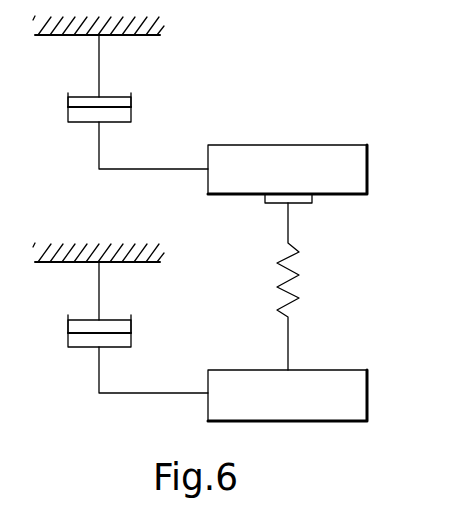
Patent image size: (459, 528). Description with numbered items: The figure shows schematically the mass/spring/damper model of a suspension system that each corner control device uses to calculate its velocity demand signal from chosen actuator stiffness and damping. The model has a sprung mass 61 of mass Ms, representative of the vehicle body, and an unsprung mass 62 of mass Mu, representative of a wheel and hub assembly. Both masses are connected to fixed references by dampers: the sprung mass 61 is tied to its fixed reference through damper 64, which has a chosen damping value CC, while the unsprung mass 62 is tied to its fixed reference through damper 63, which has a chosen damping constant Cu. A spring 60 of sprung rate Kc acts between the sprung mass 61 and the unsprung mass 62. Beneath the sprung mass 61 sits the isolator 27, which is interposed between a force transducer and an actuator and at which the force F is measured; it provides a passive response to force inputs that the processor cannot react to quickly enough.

The isolator 27 is at (300, 204).
The spring 60 is at (290, 266).
The sprung mass 61 is at (367, 184).
The unsprung mass 62 is at (367, 392).
The damper 63 is at (68, 339).
The damper 64 is at (68, 115).